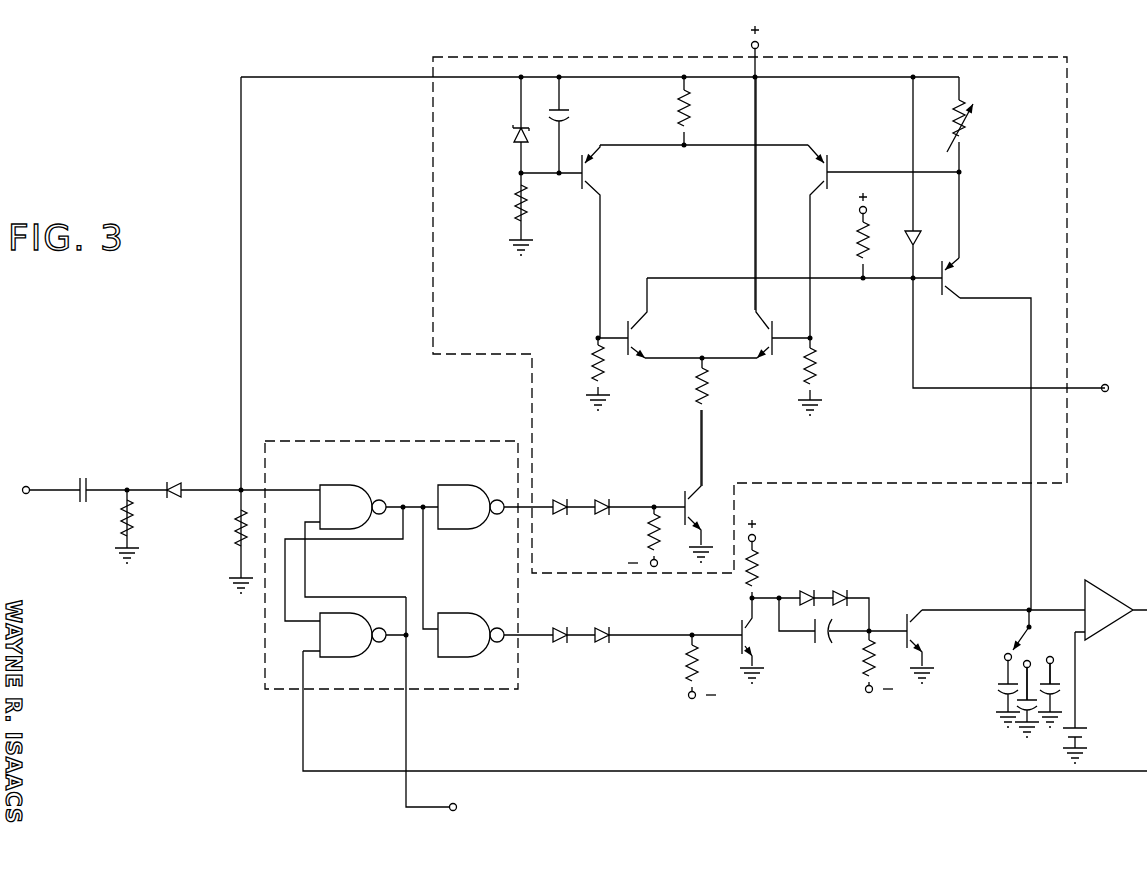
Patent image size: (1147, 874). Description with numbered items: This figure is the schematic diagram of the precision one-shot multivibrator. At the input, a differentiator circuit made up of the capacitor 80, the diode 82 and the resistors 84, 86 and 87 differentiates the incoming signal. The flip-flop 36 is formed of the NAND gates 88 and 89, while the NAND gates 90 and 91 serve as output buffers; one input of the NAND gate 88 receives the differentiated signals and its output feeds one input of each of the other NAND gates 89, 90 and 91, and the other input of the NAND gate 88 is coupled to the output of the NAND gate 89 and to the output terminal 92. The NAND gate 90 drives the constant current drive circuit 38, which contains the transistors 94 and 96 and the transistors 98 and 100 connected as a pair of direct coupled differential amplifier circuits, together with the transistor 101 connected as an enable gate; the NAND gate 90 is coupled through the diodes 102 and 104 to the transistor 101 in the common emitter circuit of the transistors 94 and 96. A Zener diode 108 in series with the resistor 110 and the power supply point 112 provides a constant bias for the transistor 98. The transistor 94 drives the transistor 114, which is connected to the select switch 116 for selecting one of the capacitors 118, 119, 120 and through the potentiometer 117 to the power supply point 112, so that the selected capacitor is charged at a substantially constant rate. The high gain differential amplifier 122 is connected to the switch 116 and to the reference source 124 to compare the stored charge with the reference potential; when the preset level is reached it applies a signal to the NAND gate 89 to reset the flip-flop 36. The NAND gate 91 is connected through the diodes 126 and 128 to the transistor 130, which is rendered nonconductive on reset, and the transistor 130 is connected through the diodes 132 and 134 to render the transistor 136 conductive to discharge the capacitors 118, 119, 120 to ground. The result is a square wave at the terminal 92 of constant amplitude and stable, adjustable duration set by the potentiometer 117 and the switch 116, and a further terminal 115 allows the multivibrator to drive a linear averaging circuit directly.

The flip-flop 36 is at (392, 440).
The constant current drive circuit 38 is at (1067, 262).
The capacitor 80 is at (83, 476).
The diode 82 is at (177, 480).
The resistor 84 is at (134, 522).
The resistor 86 is at (230, 540).
The resistor 87 is at (249, 294).
The NAND gate 88 is at (346, 478).
The NAND gate 89 is at (343, 658).
The NAND gate 90 is at (462, 485).
The NAND gate 91 is at (474, 658).
The output terminal 92 is at (456, 803).
The transistor 94 is at (641, 334).
The transistor 96 is at (763, 341).
The transistor 98 is at (598, 172).
The transistor 100 is at (820, 176).
The transistor 101 is at (708, 490).
The diode 102 is at (564, 499).
The diode 104 is at (604, 499).
The Zener diode 108 is at (512, 128).
The resistor 110 is at (512, 201).
The power supply point 112 is at (760, 49).
The transistor 114 is at (960, 278).
The terminal 115 is at (1105, 384).
The select switch 116 is at (1022, 641).
The potentiometer 117 is at (970, 141).
The capacitor 118 is at (998, 686).
The capacitor 119 is at (1022, 702).
The capacitor 120 is at (1054, 703).
The differential amplifier 122 is at (1099, 588).
The reference source 124 is at (1088, 731).
The diode 126 is at (562, 627).
The diode 128 is at (601, 644).
The transistor 130 is at (755, 641).
The diode 132 is at (806, 590).
The diode 134 is at (842, 590).
The transistor 136 is at (919, 617).